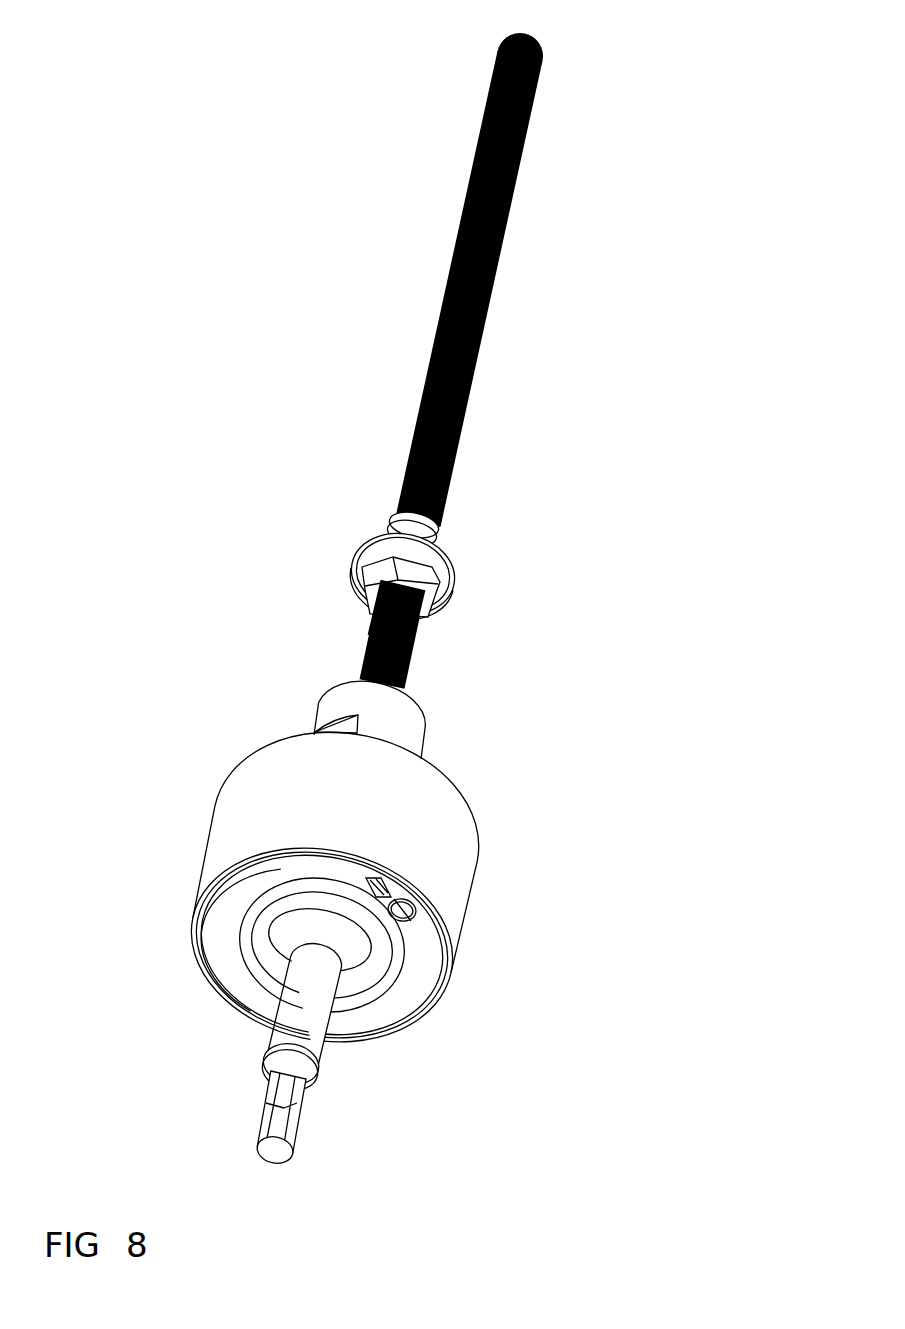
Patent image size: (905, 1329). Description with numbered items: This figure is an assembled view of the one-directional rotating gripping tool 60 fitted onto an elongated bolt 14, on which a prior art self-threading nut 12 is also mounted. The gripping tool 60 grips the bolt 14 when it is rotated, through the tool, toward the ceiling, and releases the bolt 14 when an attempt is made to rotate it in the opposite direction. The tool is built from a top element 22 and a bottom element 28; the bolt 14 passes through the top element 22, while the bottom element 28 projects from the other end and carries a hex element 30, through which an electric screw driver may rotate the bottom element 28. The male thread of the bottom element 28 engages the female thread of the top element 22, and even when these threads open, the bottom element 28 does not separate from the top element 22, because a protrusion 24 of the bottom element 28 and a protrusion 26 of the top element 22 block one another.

The elongated bolt 14 is at (460, 217).
The prior art self-threading nut 12 is at (355, 574).
The top element 22 is at (236, 803).
The protrusion of the bottom element 24 is at (392, 885).
The protrusion of the top element 26 is at (416, 910).
The bottom element 28 is at (308, 1033).
The hex element 30 is at (276, 1118).
The gripping tool 60 is at (517, 854).